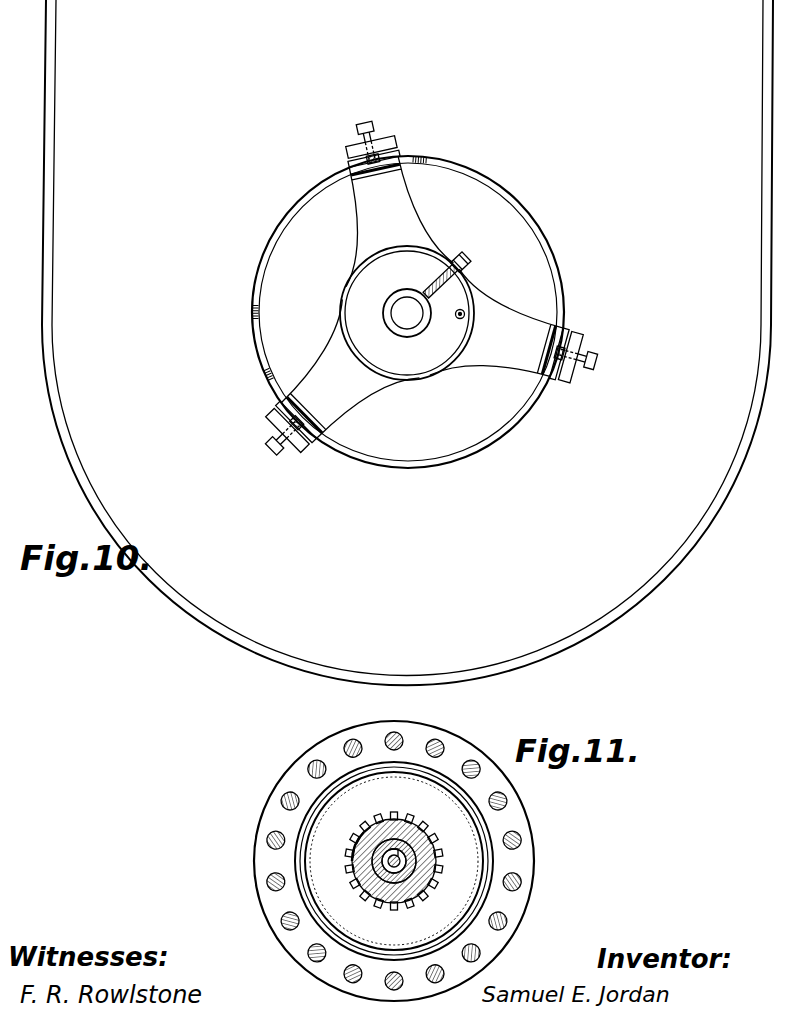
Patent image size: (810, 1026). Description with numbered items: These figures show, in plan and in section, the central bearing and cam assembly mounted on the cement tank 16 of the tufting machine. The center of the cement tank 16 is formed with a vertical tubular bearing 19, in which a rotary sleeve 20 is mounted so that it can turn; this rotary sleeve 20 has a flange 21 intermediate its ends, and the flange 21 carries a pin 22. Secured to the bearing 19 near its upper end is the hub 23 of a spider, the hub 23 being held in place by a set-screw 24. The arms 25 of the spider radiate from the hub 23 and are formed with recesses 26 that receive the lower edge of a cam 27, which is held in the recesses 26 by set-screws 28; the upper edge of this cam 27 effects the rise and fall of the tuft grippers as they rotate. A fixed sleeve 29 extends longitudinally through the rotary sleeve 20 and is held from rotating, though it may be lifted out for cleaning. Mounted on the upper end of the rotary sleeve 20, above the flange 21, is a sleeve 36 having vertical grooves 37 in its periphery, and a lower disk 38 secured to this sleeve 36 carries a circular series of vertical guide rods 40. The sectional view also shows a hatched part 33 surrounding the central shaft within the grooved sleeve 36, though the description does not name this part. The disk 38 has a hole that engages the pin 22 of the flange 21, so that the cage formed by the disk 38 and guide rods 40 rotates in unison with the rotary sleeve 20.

In FIG. 10, the cement tank 16 is at (642, 590).
In FIG. 10, the vertical tubular bearing 19 is at (408, 334).
In FIG. 11, the rotary sleeve 20 is at (371, 899).
In FIG. 10, the flange 21 is at (449, 296).
In FIG. 10, the pin 22 is at (466, 313).
In FIG. 10, the hub of spider 23 is at (431, 247).
In FIG. 10, the set-screw 24 is at (474, 253).
In FIG. 10, the arms of spider 25 is at (398, 203).
In FIG. 10, the recesses 26 is at (402, 152).
In FIG. 10, the cam 27 is at (277, 239).
In FIG. 10, the set-screws 28 is at (374, 129).
In FIG. 11, the fixed sleeve 29 is at (414, 871).
In FIG. 11, the gear hub 33 is at (427, 852).
In FIG. 11, the grooved sleeve 36 is at (407, 820).
In FIG. 11, the vertical grooves 37 is at (355, 846).
In FIG. 11, the lower disk 38 is at (517, 881).
In FIG. 11, the vertical guide rods 40 is at (492, 934).